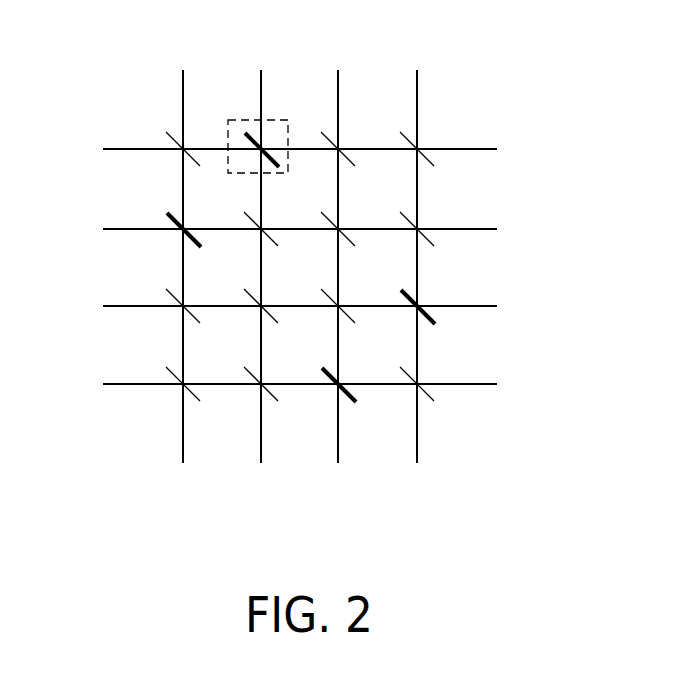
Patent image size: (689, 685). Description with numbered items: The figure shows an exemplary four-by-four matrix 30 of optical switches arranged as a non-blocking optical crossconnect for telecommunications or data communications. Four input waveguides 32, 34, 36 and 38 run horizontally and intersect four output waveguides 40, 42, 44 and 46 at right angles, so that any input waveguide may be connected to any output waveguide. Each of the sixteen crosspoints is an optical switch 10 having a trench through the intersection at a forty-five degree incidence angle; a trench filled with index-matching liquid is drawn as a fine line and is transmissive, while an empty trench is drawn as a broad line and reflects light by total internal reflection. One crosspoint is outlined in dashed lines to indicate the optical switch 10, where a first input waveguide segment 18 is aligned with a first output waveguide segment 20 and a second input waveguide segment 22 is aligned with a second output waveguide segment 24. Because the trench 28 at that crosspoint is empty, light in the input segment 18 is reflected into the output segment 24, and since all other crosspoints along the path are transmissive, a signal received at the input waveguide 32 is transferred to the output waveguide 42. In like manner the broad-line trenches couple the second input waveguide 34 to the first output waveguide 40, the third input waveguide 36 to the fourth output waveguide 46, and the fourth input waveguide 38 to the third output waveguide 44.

The optical switch 10 is at (268, 119).
The first input waveguide segment 18 is at (202, 148).
The first output waveguide segment 20 is at (328, 152).
The second input waveguide segment 22 is at (260, 93).
The second output waveguide segment 24 is at (261, 201).
The empty trench 28 is at (271, 147).
The 4×4 matrix 30 is at (549, 109).
The first input waveguide 32 is at (126, 148).
The second input waveguide 34 is at (126, 228).
The third input waveguide 36 is at (126, 305).
The fourth input waveguide 38 is at (126, 383).
The first output waveguide 40 is at (184, 431).
The second output waveguide 42 is at (262, 431).
The third output waveguide 44 is at (339, 431).
The fourth output waveguide 46 is at (418, 431).